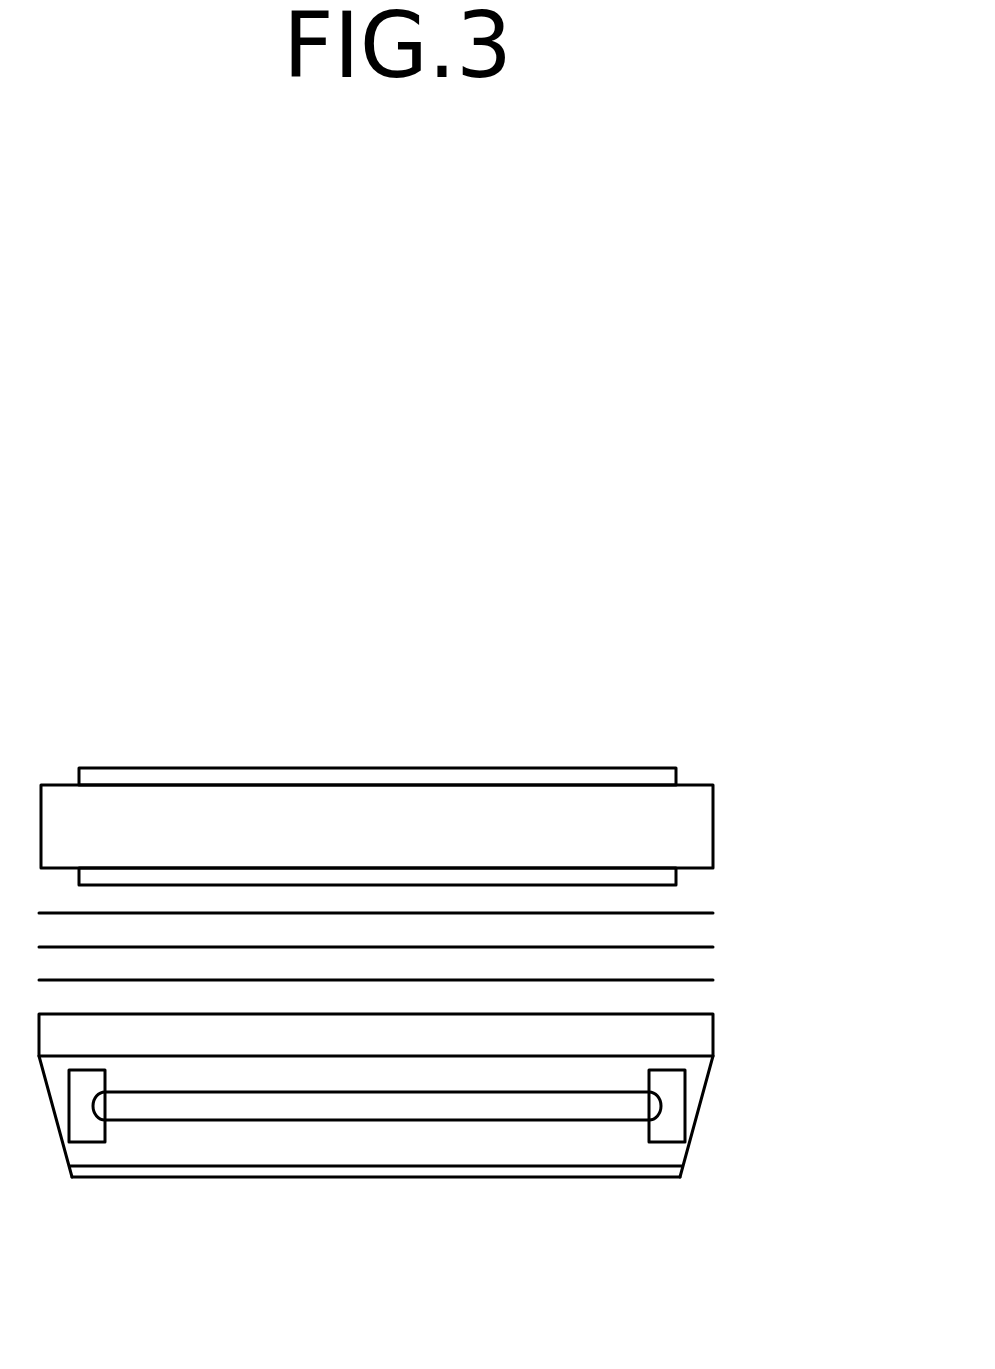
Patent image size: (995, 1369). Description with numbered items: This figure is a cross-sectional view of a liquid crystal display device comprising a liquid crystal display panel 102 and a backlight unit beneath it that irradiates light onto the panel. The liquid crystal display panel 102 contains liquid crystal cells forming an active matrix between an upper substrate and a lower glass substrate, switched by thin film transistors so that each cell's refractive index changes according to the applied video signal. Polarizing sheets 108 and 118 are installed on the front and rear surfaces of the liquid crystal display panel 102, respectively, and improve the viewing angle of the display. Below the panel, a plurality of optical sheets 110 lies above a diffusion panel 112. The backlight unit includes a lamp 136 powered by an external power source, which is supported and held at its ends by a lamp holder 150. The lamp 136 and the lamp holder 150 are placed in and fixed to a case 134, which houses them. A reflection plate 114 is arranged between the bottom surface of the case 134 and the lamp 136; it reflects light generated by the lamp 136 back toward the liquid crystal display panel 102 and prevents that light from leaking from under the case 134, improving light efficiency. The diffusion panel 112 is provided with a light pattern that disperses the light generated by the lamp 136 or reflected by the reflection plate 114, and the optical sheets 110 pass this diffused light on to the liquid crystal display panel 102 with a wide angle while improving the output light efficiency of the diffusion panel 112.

The liquid crystal display panel 102 is at (460, 826).
The polarizing sheet 108 is at (640, 773).
The polarizing sheet 118 is at (647, 883).
The optical sheets 110 is at (735, 908).
The diffusion panel 112 is at (697, 1037).
The case 134 is at (688, 1147).
The reflection plate 114 is at (240, 1173).
The lamp holder 150 is at (670, 1085).
The lamps 136 is at (572, 1110).